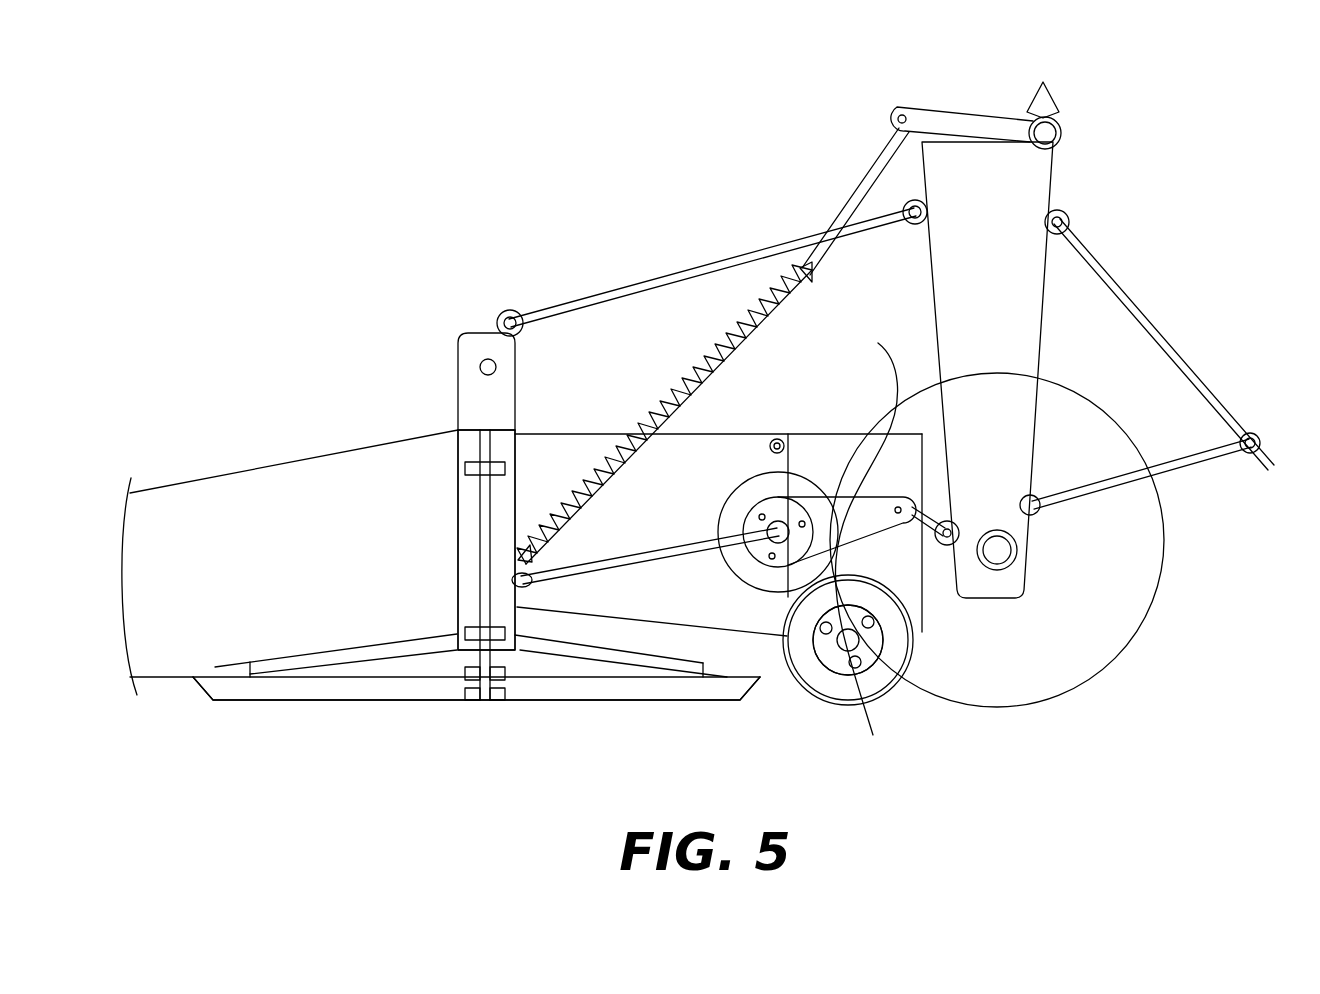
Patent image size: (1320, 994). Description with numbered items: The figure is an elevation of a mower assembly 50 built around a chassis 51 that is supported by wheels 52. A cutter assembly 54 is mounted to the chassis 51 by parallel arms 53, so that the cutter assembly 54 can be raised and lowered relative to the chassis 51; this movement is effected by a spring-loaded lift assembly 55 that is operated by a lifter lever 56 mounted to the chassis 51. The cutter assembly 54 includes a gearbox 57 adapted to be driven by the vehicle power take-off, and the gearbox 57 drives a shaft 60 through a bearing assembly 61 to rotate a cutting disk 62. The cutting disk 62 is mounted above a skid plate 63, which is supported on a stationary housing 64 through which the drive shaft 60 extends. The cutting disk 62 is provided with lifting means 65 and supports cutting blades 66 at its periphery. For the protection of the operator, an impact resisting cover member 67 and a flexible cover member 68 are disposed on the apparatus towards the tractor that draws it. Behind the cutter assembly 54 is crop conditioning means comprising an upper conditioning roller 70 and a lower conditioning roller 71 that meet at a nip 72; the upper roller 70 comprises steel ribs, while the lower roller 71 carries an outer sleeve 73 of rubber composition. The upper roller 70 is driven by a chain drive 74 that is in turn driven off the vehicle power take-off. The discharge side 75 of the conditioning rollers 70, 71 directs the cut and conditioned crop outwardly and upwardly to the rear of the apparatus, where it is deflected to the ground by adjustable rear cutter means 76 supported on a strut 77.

The mower assembly 50 is at (713, 346).
The chassis 51 is at (968, 318).
The wheels 52 is at (1079, 576).
The parallel arms 53 is at (647, 288).
The cutter assembly 54 is at (434, 518).
The spring-loaded lift assembly 55 is at (838, 228).
The lifter lever 56 is at (923, 120).
The gearbox 57 is at (471, 418).
The shaft 60 is at (480, 528).
The bearing assembly 61 is at (463, 473).
The cutting disk 62 is at (387, 667).
The skid plate 63 is at (467, 698).
The stationary housing 64 is at (457, 580).
The lifting means 65 is at (610, 657).
The cutting blades 66 is at (745, 702).
The impact resisting cover member 67 is at (302, 450).
The flexible cover member 68 is at (166, 592).
The upper conditioning roller 70 is at (747, 490).
The lower conditioning roller 71 is at (845, 688).
The nip 72 is at (780, 597).
The outer sleeve 73 is at (928, 651).
The chain drive 74 is at (866, 531).
The discharge side 75 is at (840, 567).
The adjustable rear cutter means 76 is at (1143, 307).
The strut 77 is at (1220, 458).